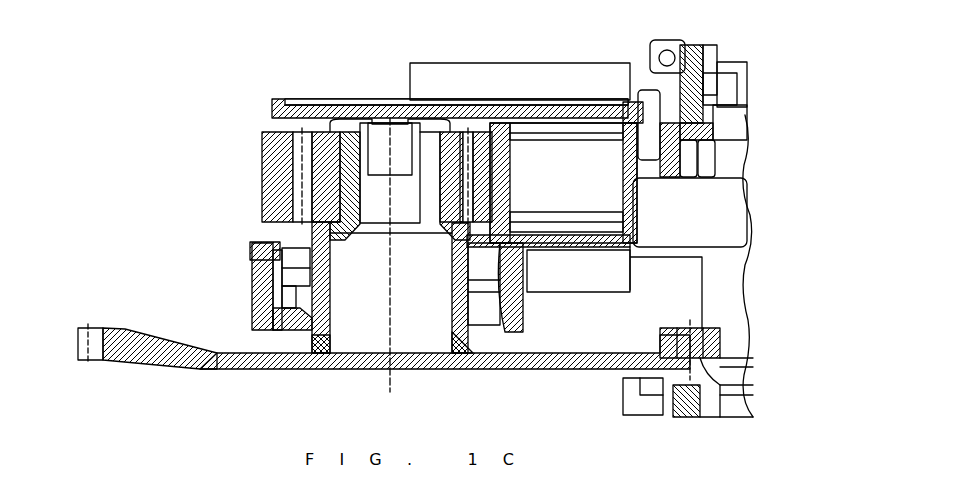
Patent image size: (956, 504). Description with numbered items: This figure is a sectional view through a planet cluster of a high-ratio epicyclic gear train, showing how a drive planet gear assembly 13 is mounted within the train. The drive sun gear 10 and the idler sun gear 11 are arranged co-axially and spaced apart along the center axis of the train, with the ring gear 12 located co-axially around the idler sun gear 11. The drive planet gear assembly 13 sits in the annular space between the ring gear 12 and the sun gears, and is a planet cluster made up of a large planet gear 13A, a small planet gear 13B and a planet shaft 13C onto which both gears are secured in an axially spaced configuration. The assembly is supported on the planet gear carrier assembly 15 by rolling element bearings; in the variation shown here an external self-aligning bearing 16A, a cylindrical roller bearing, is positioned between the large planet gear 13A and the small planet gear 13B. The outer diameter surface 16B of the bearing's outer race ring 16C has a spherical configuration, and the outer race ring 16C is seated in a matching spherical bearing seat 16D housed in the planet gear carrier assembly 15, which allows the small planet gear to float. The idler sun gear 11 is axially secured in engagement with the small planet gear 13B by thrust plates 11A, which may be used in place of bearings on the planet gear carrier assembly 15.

The drive sun gear 10 is at (720, 330).
The idler sun gear 11 is at (513, 195).
The thrust plates 11A is at (478, 108).
The ring gear 12 is at (263, 210).
The drive planet gear assembly 13 is at (182, 368).
The large planet gear 13A is at (512, 369).
The small planet gear 13B is at (418, 100).
The planet shaft 13C is at (253, 248).
The planet gear carrier assembly 15 is at (352, 93).
The self-aligning bearing 16A is at (253, 283).
The outer diameter surface 16B is at (253, 332).
The outer race ring 16C is at (252, 262).
The spherical bearing seat 16D is at (253, 305).